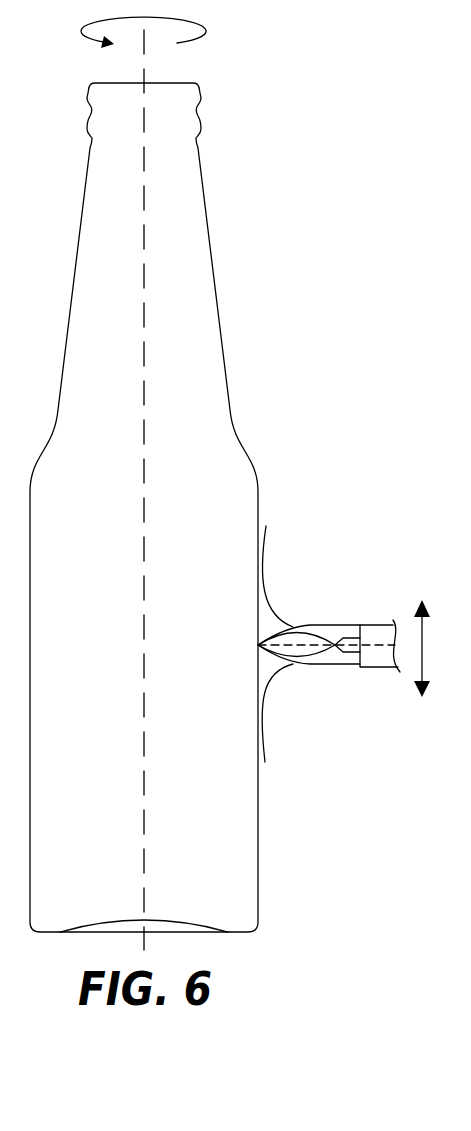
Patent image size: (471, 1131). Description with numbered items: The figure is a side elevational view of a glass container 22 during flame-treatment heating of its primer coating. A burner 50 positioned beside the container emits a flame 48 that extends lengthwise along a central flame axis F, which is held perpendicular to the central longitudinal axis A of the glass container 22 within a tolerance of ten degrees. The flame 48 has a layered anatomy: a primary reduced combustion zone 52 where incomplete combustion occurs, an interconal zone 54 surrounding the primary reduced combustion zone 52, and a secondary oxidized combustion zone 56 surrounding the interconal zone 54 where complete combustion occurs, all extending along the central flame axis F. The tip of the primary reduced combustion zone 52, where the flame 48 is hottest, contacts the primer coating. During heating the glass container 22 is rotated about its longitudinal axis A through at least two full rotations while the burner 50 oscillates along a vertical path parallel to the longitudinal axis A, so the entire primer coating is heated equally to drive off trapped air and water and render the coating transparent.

The glass container 22 is at (38, 208).
The flame 48 is at (307, 599).
The burner 50 is at (375, 627).
The primary reduced combustion zone 52 is at (337, 645).
The interconal zone 54 is at (332, 655).
The secondary oxidized combustion zone 56 is at (281, 660).
The central flame axis F is at (290, 645).
The central longitudinal axis A is at (145, 498).